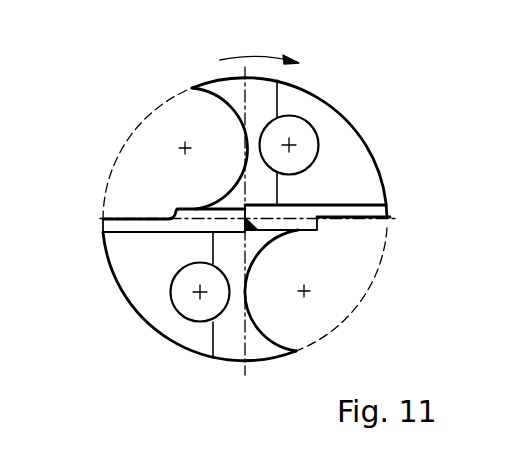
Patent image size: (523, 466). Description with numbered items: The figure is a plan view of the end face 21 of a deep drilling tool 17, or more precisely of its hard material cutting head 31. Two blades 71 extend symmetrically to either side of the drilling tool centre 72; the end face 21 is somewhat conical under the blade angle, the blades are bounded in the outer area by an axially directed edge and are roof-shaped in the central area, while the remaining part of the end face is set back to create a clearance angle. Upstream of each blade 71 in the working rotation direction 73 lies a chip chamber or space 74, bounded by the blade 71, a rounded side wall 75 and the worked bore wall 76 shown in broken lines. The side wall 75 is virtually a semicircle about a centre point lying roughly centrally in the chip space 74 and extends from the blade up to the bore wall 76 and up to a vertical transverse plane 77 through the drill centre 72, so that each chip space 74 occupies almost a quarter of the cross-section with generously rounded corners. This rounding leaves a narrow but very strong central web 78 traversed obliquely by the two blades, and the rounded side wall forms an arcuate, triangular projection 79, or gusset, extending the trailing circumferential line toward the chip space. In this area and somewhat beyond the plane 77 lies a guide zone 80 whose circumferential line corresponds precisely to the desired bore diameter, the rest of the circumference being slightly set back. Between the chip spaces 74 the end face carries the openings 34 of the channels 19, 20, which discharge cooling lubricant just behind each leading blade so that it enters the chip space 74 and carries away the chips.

The deep drilling tool 17 is at (373, 133).
The channel 19 is at (308, 153).
The channel 20 is at (184, 277).
The end face 21 is at (153, 306).
The hard material cutting head 31 is at (328, 104).
The opening 34 is at (308, 133).
The blade 71 is at (132, 218).
The drilling tool centre 72 is at (262, 238).
The working rotation direction 73 is at (247, 56).
The chip chamber 74 is at (350, 297).
The side wall 75 is at (258, 257).
The bore wall 76 is at (328, 333).
The vertical transverse plane 77 is at (240, 360).
The central web 78 is at (236, 203).
The arcuate triangular projection 79 is at (268, 358).
The guide zone 80 is at (250, 362).